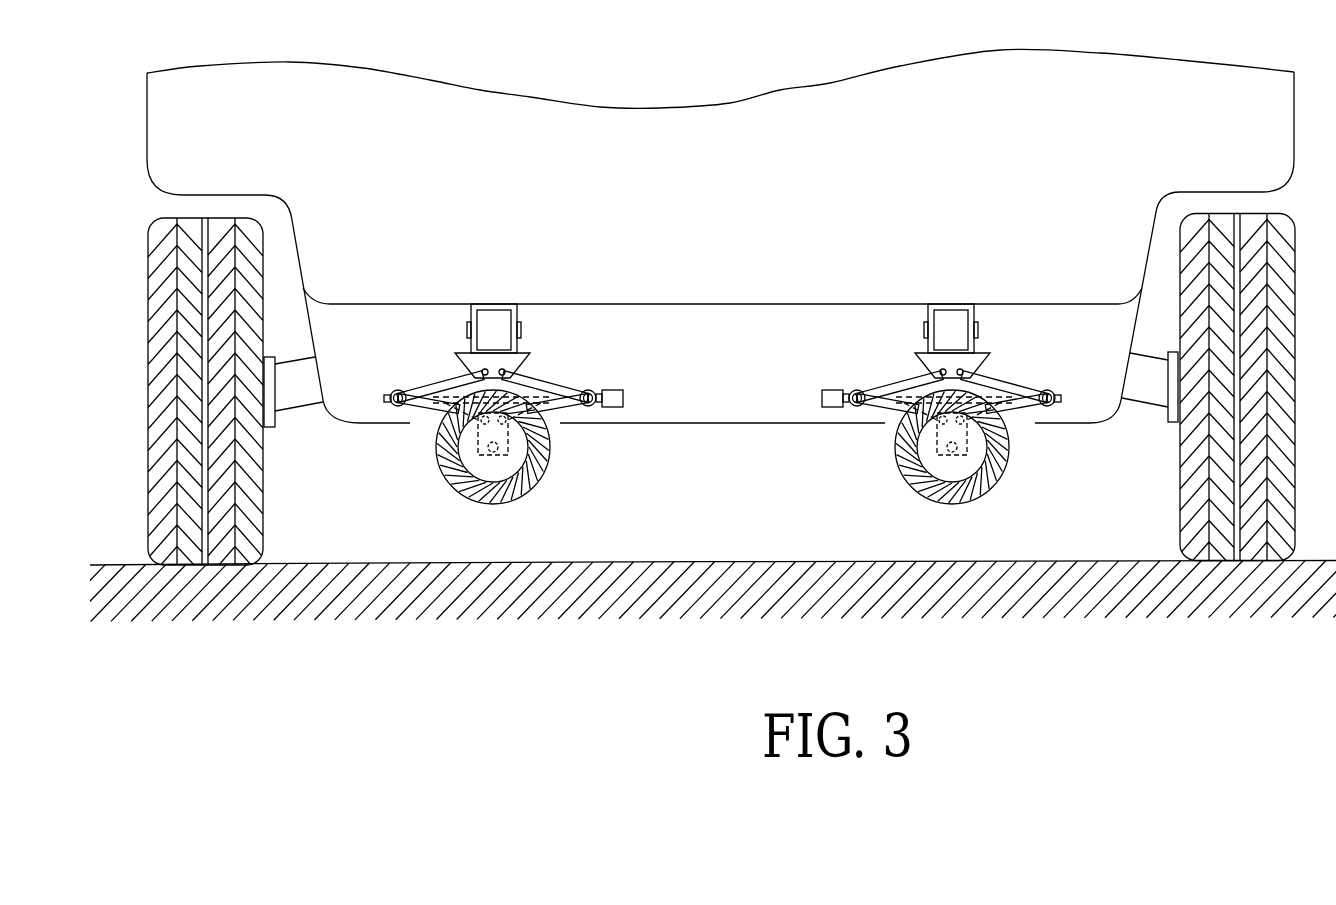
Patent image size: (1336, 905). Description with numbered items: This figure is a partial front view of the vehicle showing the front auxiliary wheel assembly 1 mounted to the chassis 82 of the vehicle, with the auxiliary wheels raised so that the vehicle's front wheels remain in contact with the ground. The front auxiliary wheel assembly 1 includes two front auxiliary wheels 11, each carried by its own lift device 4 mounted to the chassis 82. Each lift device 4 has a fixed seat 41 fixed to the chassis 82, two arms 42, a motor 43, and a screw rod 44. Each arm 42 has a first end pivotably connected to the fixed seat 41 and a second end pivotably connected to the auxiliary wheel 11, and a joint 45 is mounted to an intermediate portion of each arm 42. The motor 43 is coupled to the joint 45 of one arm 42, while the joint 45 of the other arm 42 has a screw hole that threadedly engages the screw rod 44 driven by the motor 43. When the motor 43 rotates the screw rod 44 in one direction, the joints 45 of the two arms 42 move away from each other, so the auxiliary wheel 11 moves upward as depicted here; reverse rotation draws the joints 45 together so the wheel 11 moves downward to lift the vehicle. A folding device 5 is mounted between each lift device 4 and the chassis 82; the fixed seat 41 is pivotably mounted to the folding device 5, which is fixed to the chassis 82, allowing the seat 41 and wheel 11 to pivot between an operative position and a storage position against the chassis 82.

The front auxiliary wheel assembly 1 is at (722, 568).
The front auxiliary wheel 11 is at (498, 475).
The lift device 4 is at (712, 371).
The fixed seat 41 is at (508, 311).
The arm 42 is at (498, 437).
The motor 43 is at (656, 434).
The screw rod 44 is at (464, 331).
The joint 45 is at (488, 434).
The folding device 5 is at (496, 270).
The chassis 82 is at (727, 304).